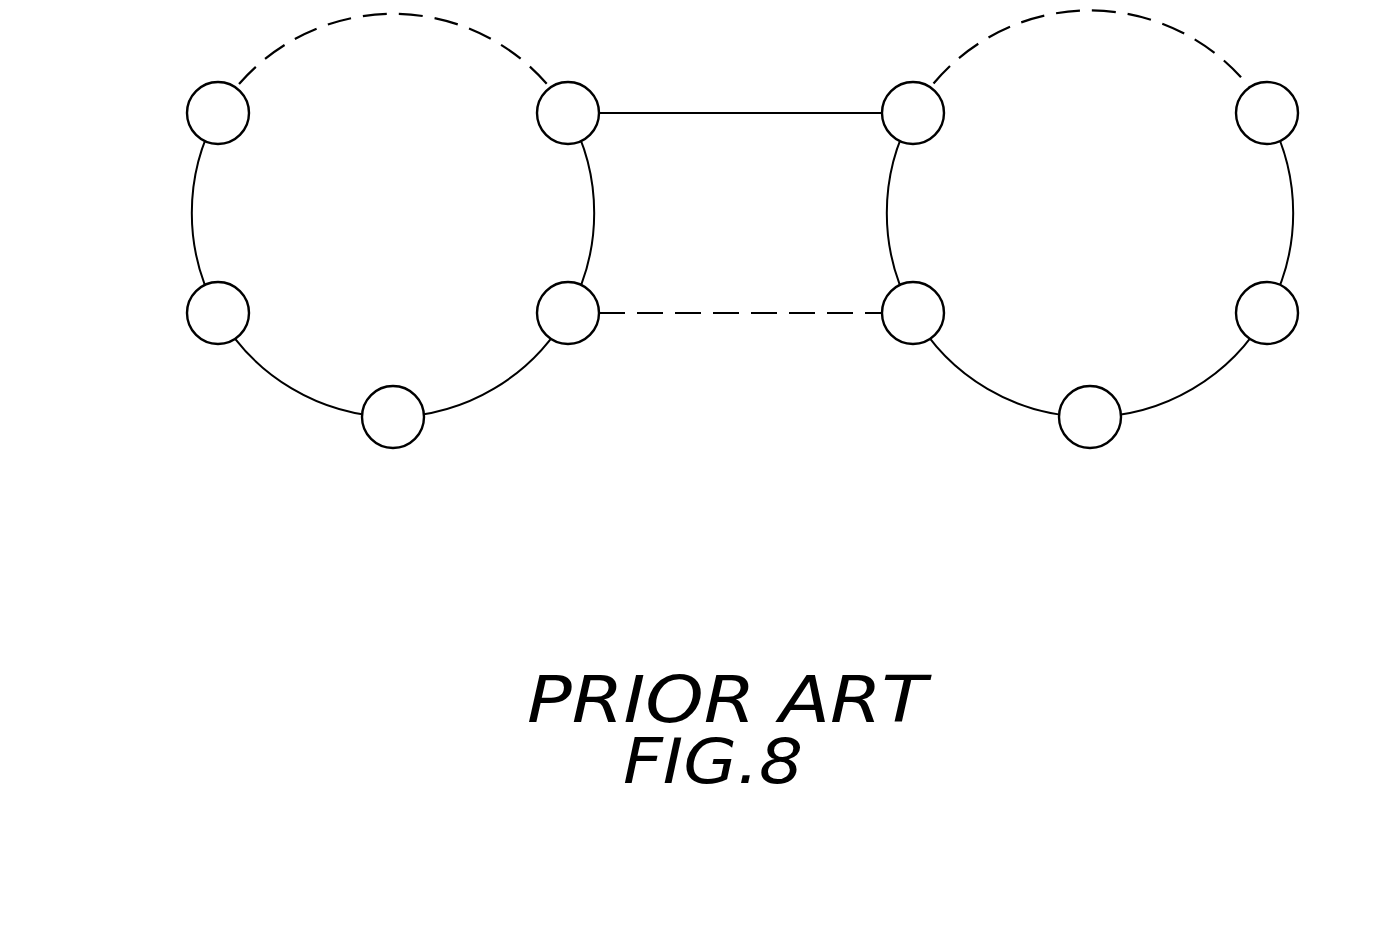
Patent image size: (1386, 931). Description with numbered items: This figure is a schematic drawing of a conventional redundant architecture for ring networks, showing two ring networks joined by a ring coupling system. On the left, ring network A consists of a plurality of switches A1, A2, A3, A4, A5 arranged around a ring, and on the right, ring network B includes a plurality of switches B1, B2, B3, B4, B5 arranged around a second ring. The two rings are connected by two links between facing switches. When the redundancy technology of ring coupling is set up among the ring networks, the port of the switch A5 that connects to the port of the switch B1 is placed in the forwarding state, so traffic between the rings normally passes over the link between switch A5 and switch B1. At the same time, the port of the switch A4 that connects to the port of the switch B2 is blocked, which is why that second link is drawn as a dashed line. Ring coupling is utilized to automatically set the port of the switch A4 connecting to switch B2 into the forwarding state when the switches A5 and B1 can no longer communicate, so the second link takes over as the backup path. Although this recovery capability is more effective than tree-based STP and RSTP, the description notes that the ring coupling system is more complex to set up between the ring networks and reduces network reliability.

The ring network A is at (193, 201).
The switch A1 is at (204, 106).
The switch A2 is at (201, 318).
The switch A3 is at (393, 432).
The switch A4 is at (573, 323).
The switch A5 is at (569, 97).
The ring network B is at (1285, 202).
The switch B1 is at (908, 95).
The switch B2 is at (905, 323).
The switch B3 is at (1089, 433).
The switch B4 is at (1283, 320).
The switch B5 is at (1278, 107).